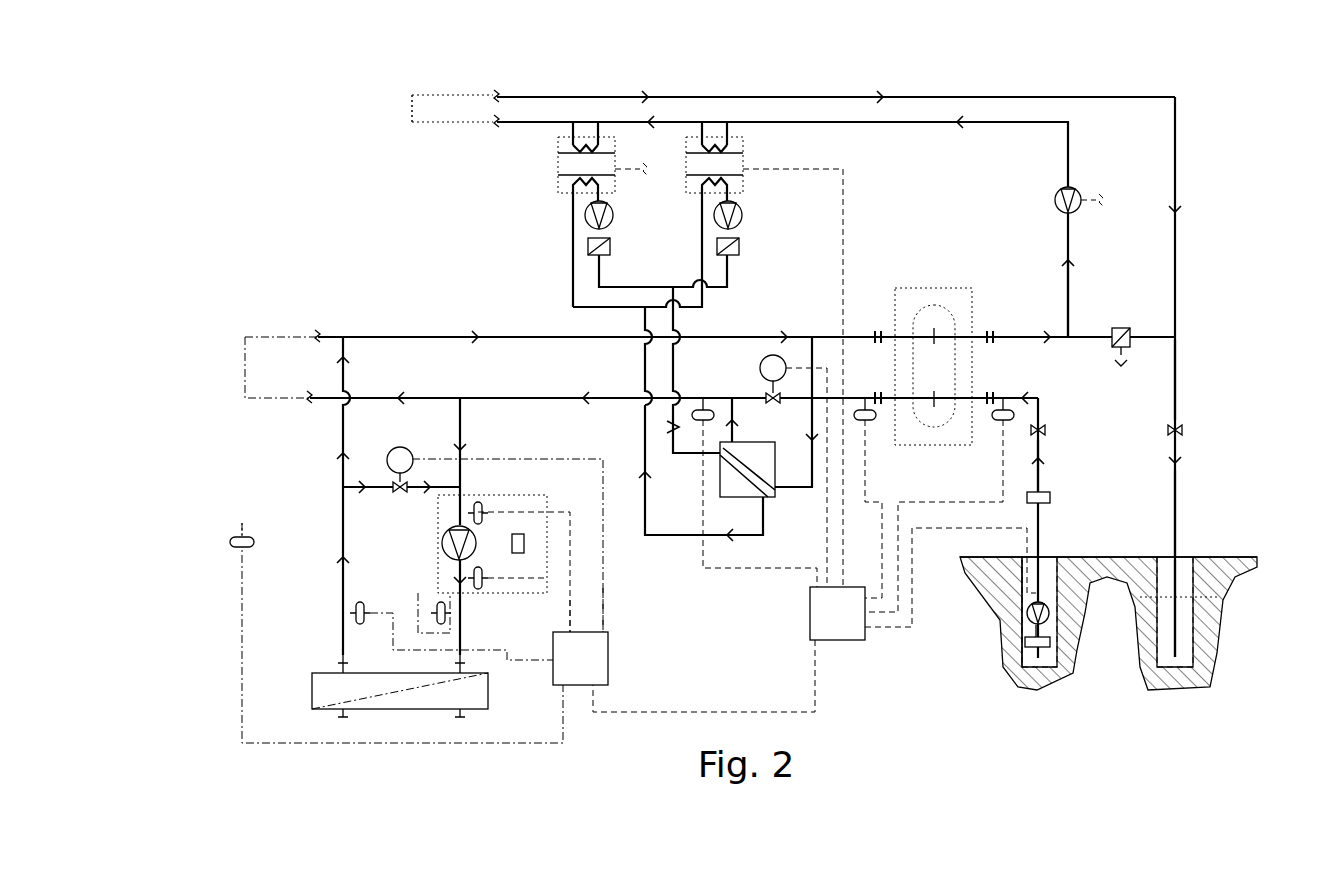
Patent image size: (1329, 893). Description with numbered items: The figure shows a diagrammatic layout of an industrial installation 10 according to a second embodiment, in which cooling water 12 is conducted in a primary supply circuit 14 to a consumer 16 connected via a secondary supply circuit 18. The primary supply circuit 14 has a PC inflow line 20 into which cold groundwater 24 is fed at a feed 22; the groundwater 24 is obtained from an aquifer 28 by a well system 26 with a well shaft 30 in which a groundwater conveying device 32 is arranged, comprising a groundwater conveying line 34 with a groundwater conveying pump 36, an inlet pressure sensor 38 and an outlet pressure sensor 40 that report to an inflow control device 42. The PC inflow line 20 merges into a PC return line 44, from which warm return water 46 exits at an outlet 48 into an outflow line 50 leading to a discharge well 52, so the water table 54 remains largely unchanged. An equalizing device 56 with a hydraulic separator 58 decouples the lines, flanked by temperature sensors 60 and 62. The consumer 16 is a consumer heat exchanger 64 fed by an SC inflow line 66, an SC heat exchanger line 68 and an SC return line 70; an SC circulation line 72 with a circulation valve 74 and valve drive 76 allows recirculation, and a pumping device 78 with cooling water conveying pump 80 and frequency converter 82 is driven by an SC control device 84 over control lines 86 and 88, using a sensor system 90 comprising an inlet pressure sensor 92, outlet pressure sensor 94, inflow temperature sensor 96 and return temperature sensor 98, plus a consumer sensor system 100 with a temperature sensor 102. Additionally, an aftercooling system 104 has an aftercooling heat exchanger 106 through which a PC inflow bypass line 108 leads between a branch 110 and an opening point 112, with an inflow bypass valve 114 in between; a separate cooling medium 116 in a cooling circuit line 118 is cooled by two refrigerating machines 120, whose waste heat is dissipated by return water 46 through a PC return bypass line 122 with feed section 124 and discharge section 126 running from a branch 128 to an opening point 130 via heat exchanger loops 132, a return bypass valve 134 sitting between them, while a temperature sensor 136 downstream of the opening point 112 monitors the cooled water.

The industrial installation 10 is at (383, 184).
The cooling water 12 is at (545, 395).
The primary supply circuit 14 is at (512, 332).
The consumer 16 is at (357, 714).
The secondary supply circuit 18 is at (302, 518).
The PC inflow line 20 is at (565, 395).
The feed 22 is at (1040, 405).
The groundwater 24 is at (1046, 670).
The well system 26 is at (1094, 670).
The aquifer 28 is at (1020, 690).
The well shaft 30 is at (1042, 555).
The groundwater conveying device 32 is at (1027, 632).
The groundwater conveying line 34 is at (1040, 466).
The groundwater conveying pump 36 is at (1046, 618).
The inlet pressure sensor 38 is at (1027, 648).
The outlet pressure sensor 40 is at (1052, 497).
The inflow control device 42 is at (848, 642).
The PC return line 44 is at (555, 335).
The return water 46 is at (1178, 368).
The outlet 48 is at (1178, 430).
The outflow line 50 is at (1178, 485).
The discharge well 52 is at (1178, 550).
The water table 54 is at (1162, 555).
The equalizing device 56 is at (918, 287).
The hydraulic separator 58 is at (944, 305).
The temperature sensor 60 is at (1010, 410).
The temperature sensor 62 is at (868, 410).
The consumer heat exchanger 64 is at (428, 712).
The SC inflow line 66 is at (463, 407).
The SC heat exchanger line 68 is at (325, 690).
The SC return line 70 is at (341, 590).
The SC circulation line 72 is at (380, 490).
The circulation valve 74 is at (403, 492).
The valve drive 76 is at (398, 447).
The pumping device 78 is at (524, 494).
The cooling water conveying pump 80 is at (452, 550).
The frequency converter 82 is at (522, 533).
The SC control device 84 is at (598, 665).
The control line 86 is at (605, 607).
The control line 88 is at (565, 622).
The sensor system 90 is at (468, 598).
The inlet pressure sensor 92 is at (480, 500).
The outlet pressure sensor 94 is at (488, 575).
The inflow temperature sensor 96 is at (441, 627).
The return temperature sensor 98 is at (364, 618).
The consumer sensor system 100 is at (235, 533).
The temperature sensor 102 is at (236, 548).
The aftercooling system 104 is at (828, 92).
The aftercooling heat exchanger 106 is at (775, 495).
The PC inflow bypass line 108 is at (812, 422).
The branch 110 is at (812, 400).
The opening point 112 is at (732, 430).
The inflow bypass valve 114 is at (765, 393).
The separate cooling medium 116 is at (660, 538).
The cooling circuit line 118 is at (685, 538).
The refrigerating machine 120 is at (608, 132).
The PC return bypass line 122 is at (1063, 160).
The feed section 124 is at (998, 120).
The discharge section 126 is at (1123, 96).
The branch 128 is at (1070, 333).
The opening point 130 is at (1178, 333).
The heat exchanger loop 132 is at (702, 125).
The return bypass valve 134 is at (1125, 327).
The temperature sensor 136 is at (706, 408).